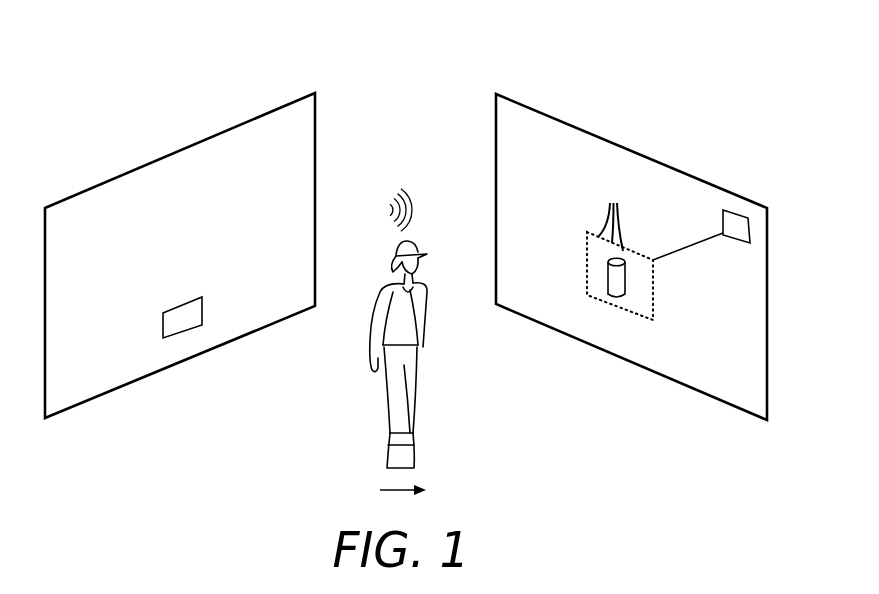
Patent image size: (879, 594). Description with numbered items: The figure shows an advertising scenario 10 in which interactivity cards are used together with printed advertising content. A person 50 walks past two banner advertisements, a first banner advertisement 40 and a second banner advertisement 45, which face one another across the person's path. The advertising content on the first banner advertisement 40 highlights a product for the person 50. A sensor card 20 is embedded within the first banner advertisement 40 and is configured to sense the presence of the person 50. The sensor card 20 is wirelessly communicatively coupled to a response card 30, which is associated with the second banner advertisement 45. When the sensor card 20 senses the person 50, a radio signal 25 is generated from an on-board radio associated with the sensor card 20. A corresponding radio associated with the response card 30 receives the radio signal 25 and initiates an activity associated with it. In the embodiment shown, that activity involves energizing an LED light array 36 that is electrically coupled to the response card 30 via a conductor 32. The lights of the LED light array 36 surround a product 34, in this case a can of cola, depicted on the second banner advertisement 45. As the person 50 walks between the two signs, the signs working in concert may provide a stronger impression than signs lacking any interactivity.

The advertising scenario 10 is at (694, 39).
The sensor card 20 is at (178, 318).
The radio signal 25 is at (413, 202).
The response card 30 is at (735, 223).
The conductor 32 is at (692, 247).
The product 34 is at (618, 282).
The LED light array 36 is at (611, 214).
The first banner advertisement 40 is at (280, 127).
The second banner advertisement 45 is at (585, 148).
The person 50 is at (461, 394).